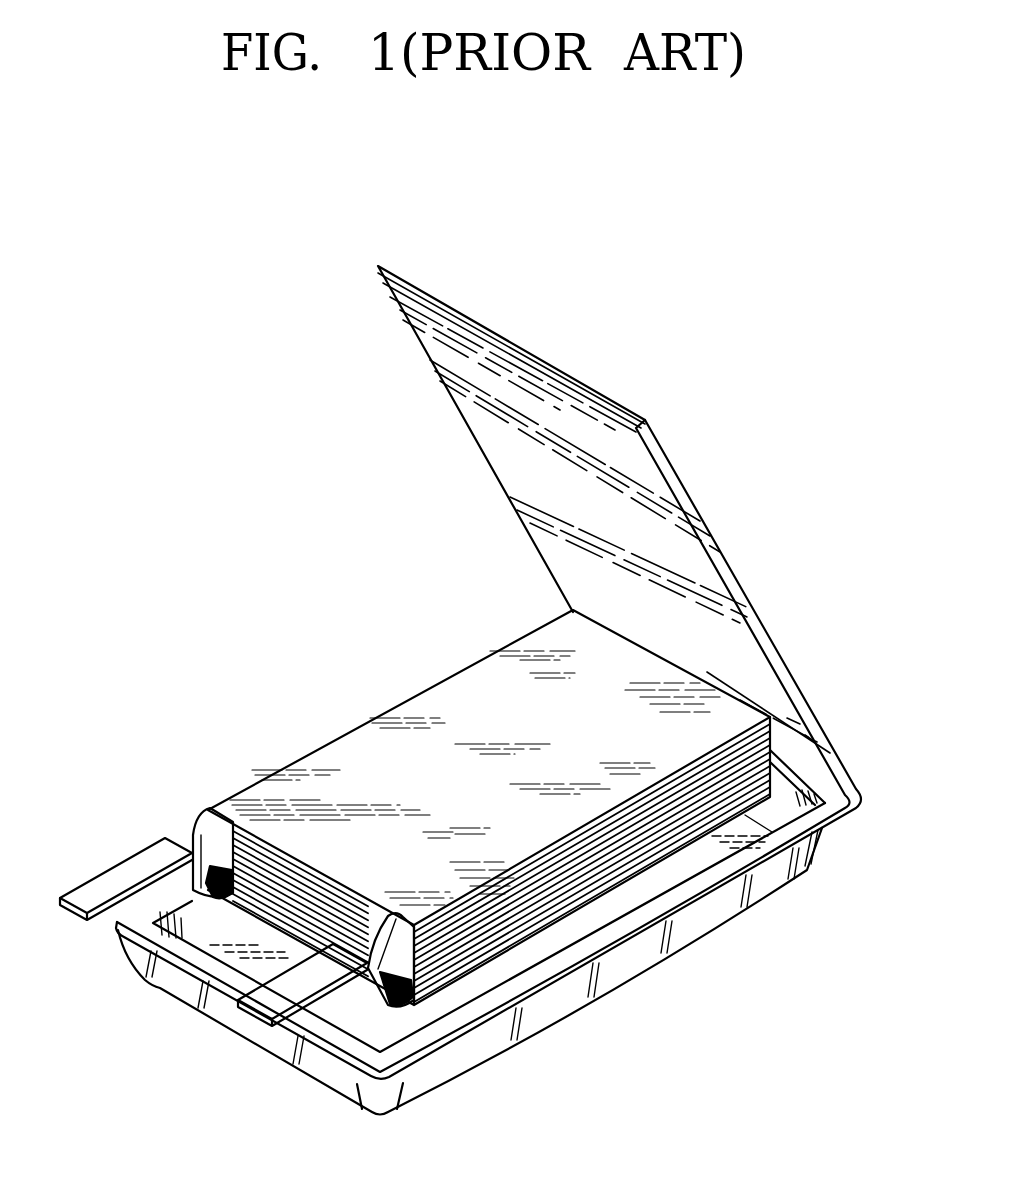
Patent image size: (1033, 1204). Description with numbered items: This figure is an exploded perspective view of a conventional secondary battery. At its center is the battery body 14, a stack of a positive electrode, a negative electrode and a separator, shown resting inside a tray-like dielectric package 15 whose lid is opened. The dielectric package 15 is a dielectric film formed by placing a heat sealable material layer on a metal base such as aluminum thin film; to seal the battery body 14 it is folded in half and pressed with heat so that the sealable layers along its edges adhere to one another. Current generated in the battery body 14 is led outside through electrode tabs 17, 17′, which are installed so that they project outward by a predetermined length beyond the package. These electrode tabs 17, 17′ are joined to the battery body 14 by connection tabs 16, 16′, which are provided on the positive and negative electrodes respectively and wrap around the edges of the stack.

The battery body 14 is at (368, 722).
The dielectric package 15 is at (596, 1001).
The connection tab 16 is at (195, 880).
The connection tab 16′ is at (370, 985).
The electrode tab 17 is at (107, 883).
The electrode tab 17′ is at (257, 998).